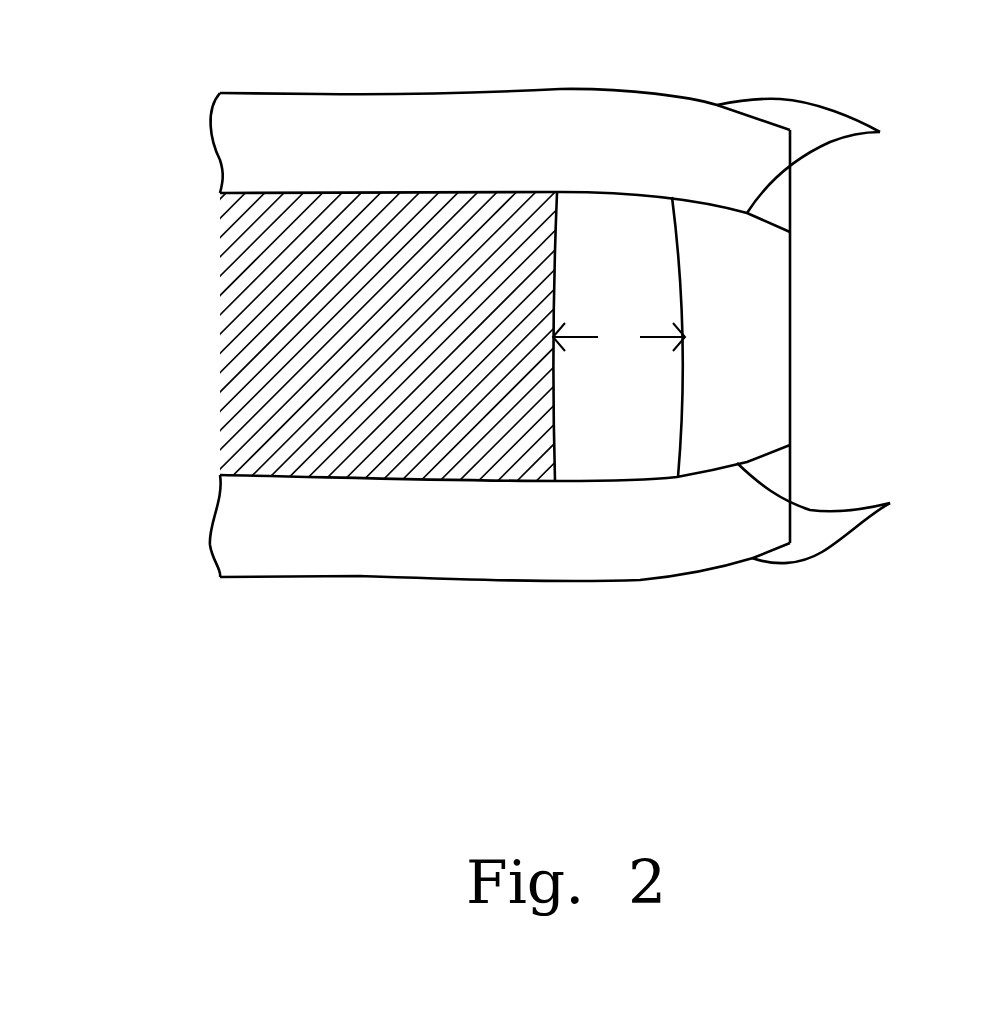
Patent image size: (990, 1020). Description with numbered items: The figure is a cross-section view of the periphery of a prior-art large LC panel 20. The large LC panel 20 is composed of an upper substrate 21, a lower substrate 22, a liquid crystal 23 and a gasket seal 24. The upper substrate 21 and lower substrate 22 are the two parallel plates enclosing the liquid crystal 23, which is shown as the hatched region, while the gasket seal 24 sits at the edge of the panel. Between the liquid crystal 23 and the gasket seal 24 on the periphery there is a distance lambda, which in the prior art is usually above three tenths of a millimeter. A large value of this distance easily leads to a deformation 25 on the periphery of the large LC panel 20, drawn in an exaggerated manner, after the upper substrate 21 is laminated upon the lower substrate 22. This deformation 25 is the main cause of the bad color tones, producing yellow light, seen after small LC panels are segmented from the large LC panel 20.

The large LC panel 20 is at (545, 728).
The upper substrate 21 is at (420, 120).
The lower substrate 22 is at (338, 540).
The liquid crystal 23 is at (253, 325).
The gasket seal 24 is at (743, 338).
The deformation 25 is at (880, 132).